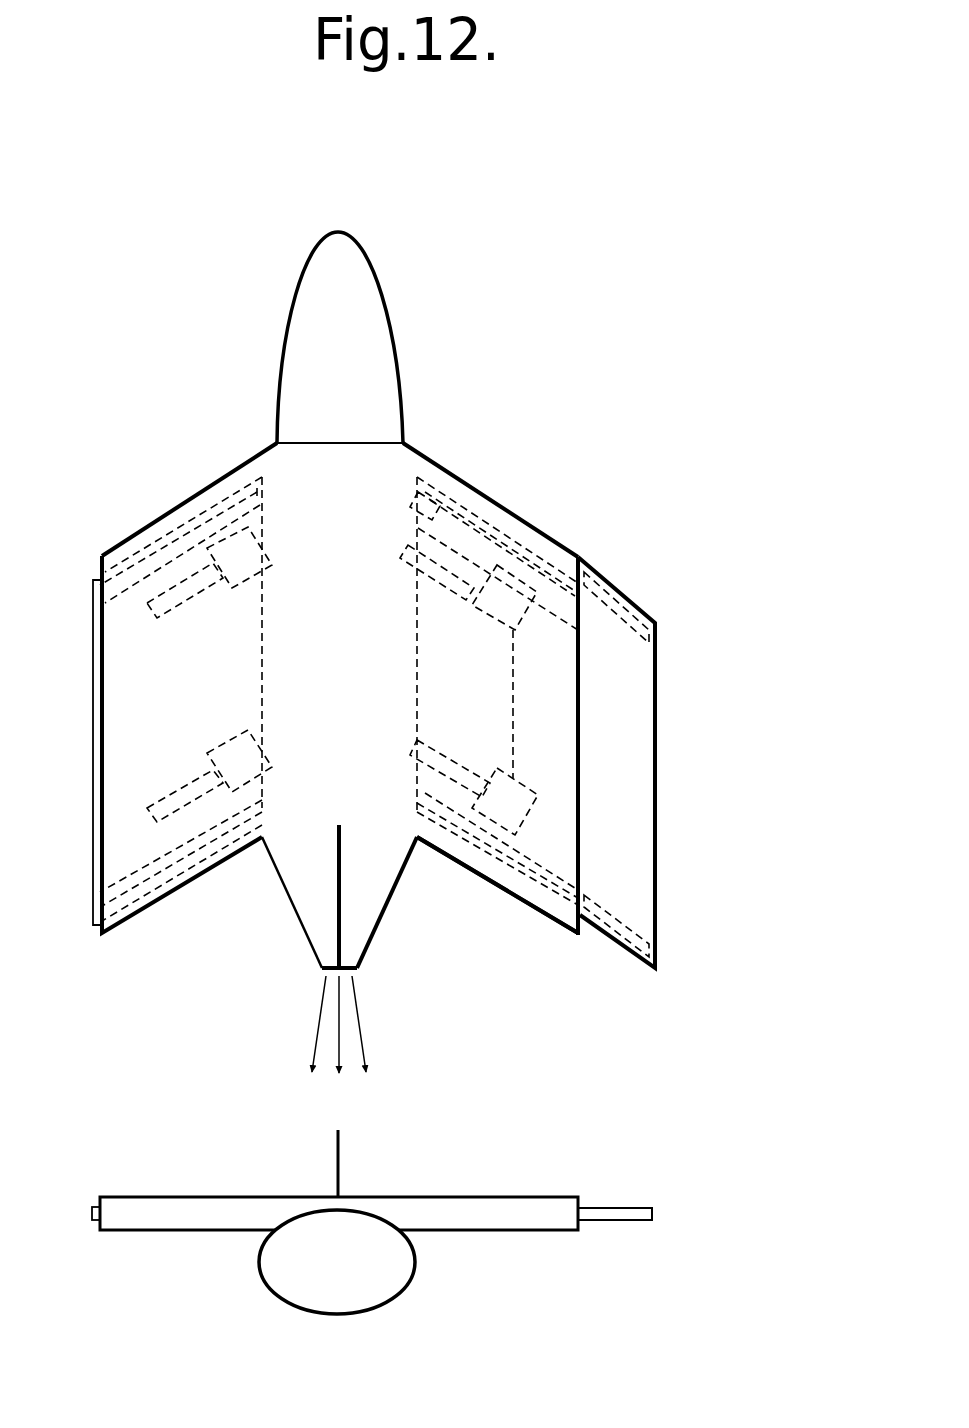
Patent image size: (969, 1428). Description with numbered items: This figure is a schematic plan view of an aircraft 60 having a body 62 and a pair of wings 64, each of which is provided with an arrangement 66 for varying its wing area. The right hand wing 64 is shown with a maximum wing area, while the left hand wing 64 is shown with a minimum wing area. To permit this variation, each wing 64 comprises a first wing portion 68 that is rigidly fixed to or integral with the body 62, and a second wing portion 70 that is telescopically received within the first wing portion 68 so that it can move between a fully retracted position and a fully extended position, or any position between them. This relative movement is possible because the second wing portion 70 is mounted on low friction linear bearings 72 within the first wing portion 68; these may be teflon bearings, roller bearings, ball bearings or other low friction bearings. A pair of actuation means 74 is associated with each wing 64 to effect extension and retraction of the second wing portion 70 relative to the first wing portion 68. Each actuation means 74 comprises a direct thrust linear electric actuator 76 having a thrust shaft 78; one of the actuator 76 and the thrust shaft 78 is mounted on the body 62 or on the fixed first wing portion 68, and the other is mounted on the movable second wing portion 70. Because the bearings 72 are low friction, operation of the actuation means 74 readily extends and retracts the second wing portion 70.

The aircraft 60 is at (290, 253).
The body 62 is at (372, 360).
The wings 64 is at (298, 452).
The arrangement for varying the wing area 66 is at (586, 962).
The first wing portion 68 is at (477, 862).
The second wing portion 70 is at (627, 786).
The low friction linear bearings 72 is at (632, 640).
The actuation means 74 is at (475, 552).
The direct thrust linear electric actuator 76 is at (547, 570).
The thrust shaft 78 is at (437, 547).